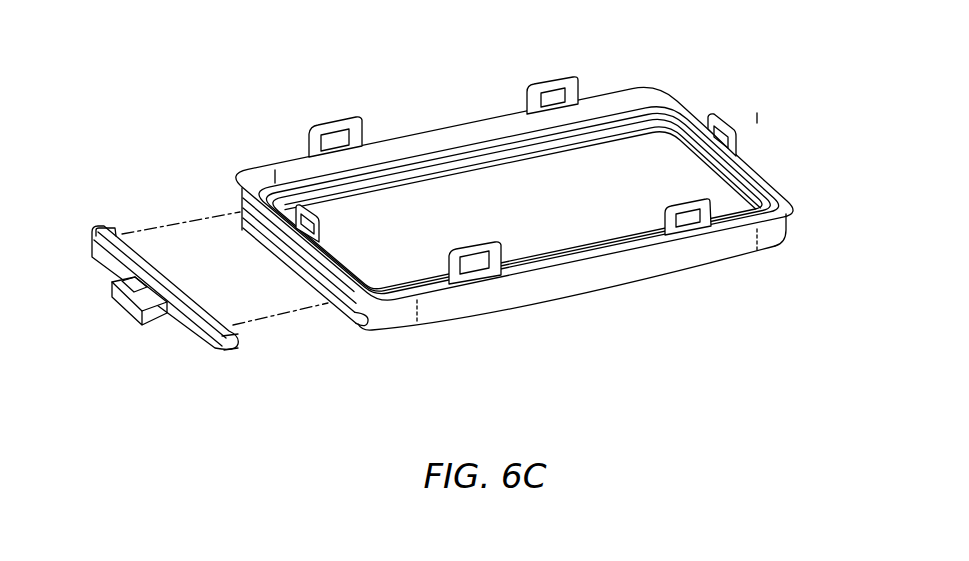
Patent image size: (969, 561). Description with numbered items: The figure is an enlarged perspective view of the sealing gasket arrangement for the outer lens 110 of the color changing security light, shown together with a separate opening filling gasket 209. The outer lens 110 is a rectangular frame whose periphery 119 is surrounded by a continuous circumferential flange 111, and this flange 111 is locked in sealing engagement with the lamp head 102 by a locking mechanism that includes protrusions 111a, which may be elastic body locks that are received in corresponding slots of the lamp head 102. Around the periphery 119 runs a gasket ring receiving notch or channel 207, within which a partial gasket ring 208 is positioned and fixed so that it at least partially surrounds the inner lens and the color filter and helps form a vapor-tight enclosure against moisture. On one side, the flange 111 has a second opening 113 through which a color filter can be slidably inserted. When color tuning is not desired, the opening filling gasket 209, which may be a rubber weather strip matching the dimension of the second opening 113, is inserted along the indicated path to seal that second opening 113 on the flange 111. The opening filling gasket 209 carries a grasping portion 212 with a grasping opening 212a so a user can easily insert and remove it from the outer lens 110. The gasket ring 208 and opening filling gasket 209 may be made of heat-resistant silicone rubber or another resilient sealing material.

The lamp head 102 is at (800, 177).
The outer lens 110 is at (715, 257).
The continuous circumferential flange 111 is at (632, 268).
The protrusion 111a is at (549, 92).
The second opening 113 is at (342, 322).
The periphery 119 is at (496, 304).
The gasket ring receiving notch or channel 207 is at (417, 158).
The partial gasket ring 208 is at (643, 112).
The opening filling gasket 209 is at (92, 238).
The grasping portion 212 is at (130, 314).
The grasping opening 212a is at (114, 273).